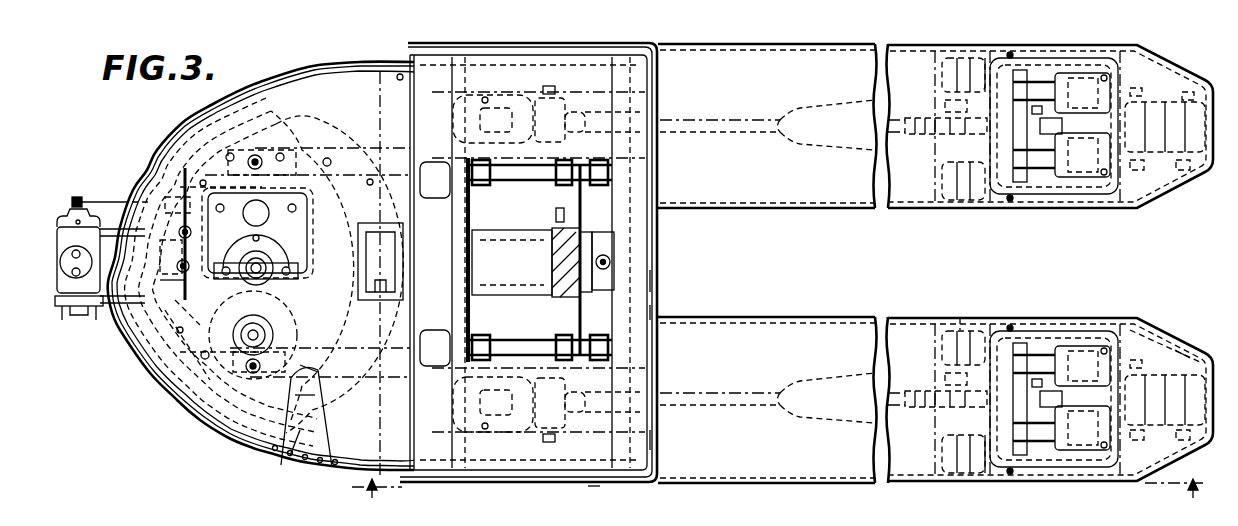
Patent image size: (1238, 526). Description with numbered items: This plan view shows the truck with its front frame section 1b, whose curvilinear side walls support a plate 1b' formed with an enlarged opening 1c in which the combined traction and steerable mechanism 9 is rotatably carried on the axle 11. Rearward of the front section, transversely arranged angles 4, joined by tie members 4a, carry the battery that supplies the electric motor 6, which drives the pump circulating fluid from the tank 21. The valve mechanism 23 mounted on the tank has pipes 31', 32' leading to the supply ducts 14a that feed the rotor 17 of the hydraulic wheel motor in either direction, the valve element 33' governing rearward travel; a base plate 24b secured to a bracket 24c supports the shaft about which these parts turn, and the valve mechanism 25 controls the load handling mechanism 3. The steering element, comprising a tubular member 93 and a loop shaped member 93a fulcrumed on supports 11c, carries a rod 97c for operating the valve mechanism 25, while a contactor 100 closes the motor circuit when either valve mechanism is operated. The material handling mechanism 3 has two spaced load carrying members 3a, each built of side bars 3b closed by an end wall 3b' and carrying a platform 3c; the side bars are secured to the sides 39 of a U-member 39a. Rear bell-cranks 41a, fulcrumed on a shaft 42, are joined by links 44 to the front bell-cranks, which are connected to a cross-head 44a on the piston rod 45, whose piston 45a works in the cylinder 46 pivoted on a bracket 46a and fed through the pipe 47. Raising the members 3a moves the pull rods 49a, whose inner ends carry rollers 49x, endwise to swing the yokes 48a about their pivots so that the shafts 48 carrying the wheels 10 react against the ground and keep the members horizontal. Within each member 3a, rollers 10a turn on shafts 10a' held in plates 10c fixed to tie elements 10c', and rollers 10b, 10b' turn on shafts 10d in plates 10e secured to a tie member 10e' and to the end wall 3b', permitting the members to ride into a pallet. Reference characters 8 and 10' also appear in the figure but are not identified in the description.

The front section 1b is at (316, 417).
The plate 1b' is at (293, 458).
The enlarged opening 1c is at (320, 374).
The material handling mechanism 3 is at (757, 511).
The load carrying members 3a is at (820, 186).
The side bars 3b is at (900, 285).
The end wall 3b' is at (1190, 342).
The platform 3c is at (727, 196).
The angles 4 is at (628, 470).
The tie members 4a is at (536, 470).
The motor 6 is at (300, 320).
The direction arrow 8 is at (196, 263).
The combined traction and steerable mechanism 9 is at (309, 426).
The supporting wheels 10 is at (1045, 280).
The motor support 10' is at (969, 306).
The roller 10a is at (942, 263).
The shaft 10a' is at (981, 291).
The roller 10b is at (1165, 263).
The roller 10b' is at (1163, 310).
The plates 10c is at (937, 262).
The transverse tie elements 10c' is at (965, 242).
The shafts 10d is at (1190, 92).
The plates 10e is at (1156, 296).
The transverse tie member 10e' is at (1144, 329).
The axle 11 is at (210, 165).
The supports 11c is at (68, 210).
The supply duct 14a is at (248, 101).
The rotor 17 is at (186, 302).
The tank 21 is at (308, 210).
The valve mechanism 23 is at (183, 340).
The base plate 24b is at (269, 218).
The bracket 24c is at (267, 275).
The valve mechanism 25 is at (280, 165).
The pipe 31' is at (250, 408).
The pipe 32' is at (288, 131).
The valve element 33' is at (200, 217).
The side 39 is at (554, 482).
The U-member 39a is at (660, 440).
The rear bell-cranks 41a is at (665, 312).
The shaft 42 is at (556, 220).
The link 44 is at (540, 260).
The cross-head 44a is at (470, 215).
The piston rod 45 is at (550, 300).
The piston 45a is at (588, 300).
The cylinder 46 is at (500, 296).
The bracket 46a is at (655, 282).
The fluid supply pipe 47 is at (600, 234).
The shaft 48 is at (1155, 335).
The yoke 48a is at (1085, 495).
The pull rod 49a is at (760, 128).
The rollers 49x is at (550, 88).
The tubular member 93 is at (58, 285).
The loop shaped member 93a is at (90, 322).
The rod 97c is at (82, 197).
The contactor 100 is at (356, 278).